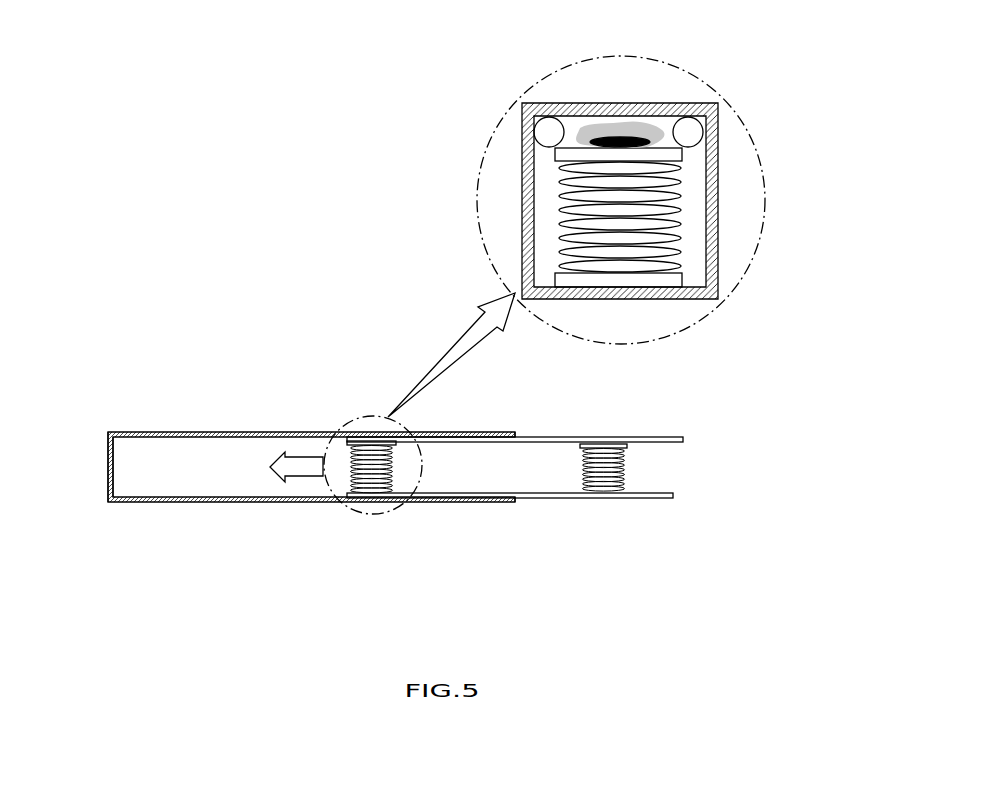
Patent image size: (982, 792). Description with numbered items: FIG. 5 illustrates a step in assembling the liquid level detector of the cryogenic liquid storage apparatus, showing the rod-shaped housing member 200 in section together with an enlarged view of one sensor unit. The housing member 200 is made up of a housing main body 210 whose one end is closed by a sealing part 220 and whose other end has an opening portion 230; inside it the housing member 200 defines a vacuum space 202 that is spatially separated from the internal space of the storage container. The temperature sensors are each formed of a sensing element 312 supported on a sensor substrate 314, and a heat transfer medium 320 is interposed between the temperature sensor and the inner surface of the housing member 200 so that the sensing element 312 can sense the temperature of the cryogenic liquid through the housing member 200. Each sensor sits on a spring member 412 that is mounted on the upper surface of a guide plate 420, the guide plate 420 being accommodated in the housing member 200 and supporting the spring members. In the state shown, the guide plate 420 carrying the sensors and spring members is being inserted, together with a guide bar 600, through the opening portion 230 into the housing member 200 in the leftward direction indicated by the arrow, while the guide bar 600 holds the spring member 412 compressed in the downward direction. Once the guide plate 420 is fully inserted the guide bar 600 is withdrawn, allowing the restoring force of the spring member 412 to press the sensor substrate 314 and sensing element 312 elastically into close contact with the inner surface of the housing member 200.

The housing member 200 is at (248, 508).
The vacuum space 202 is at (222, 460).
The housing main body 210 is at (170, 503).
The sealing part 220 is at (110, 465).
The opening portion 230 is at (512, 490).
The sensing element 312 is at (620, 140).
The sensor substrate 314 is at (602, 444).
The heat transfer medium 320 is at (648, 132).
The spring 412 is at (620, 468).
The guide plate 420 is at (645, 498).
The guide bar 600 is at (665, 437).